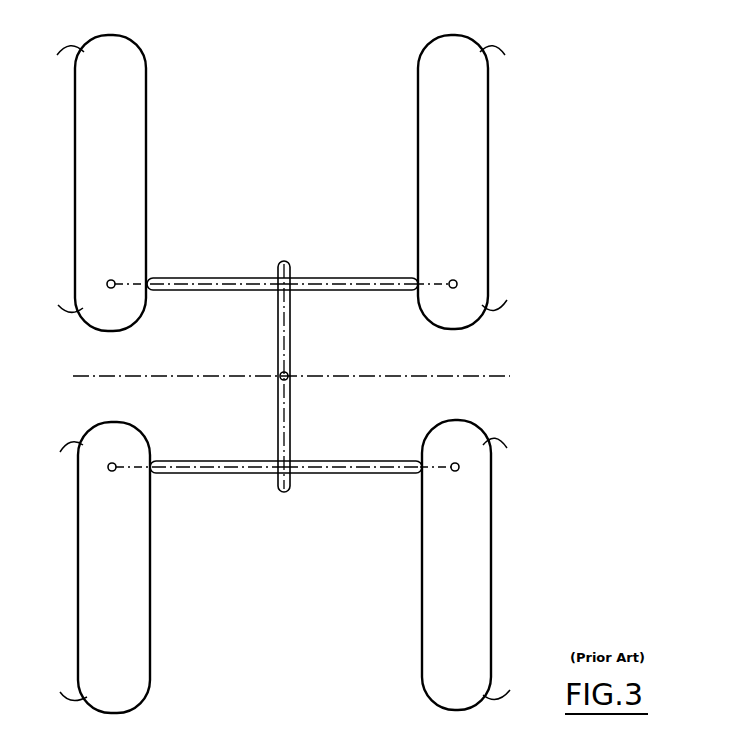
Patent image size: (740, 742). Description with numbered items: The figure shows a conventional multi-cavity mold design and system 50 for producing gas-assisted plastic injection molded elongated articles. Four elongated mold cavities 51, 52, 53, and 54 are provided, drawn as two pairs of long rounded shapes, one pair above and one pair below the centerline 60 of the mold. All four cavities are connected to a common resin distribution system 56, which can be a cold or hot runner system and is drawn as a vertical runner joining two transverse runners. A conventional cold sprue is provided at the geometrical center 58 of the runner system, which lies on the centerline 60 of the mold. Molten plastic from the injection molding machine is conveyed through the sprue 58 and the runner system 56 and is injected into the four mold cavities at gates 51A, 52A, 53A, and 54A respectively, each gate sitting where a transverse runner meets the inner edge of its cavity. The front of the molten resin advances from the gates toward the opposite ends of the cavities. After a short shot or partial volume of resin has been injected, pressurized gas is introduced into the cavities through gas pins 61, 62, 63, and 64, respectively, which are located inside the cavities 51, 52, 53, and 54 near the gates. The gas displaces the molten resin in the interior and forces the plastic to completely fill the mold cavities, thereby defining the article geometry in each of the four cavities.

The multi-cavity mold design and system 50 is at (530, 382).
The elongated mold cavity 51 is at (143, 172).
The elongated mold cavity 52 is at (423, 162).
The elongated mold cavity 53 is at (145, 568).
The elongated mold cavity 54 is at (430, 553).
The gate 51A is at (148, 279).
The gate 52A is at (418, 279).
The gate 53A is at (151, 471).
The gate 54A is at (422, 472).
The resin distribution system 56 is at (278, 322).
The sprue 58 is at (288, 372).
The centerline 60 is at (395, 375).
The gas pin 61 is at (112, 279).
The gas pin 62 is at (457, 281).
The gas pin 63 is at (115, 464).
The gas pin 64 is at (452, 463).